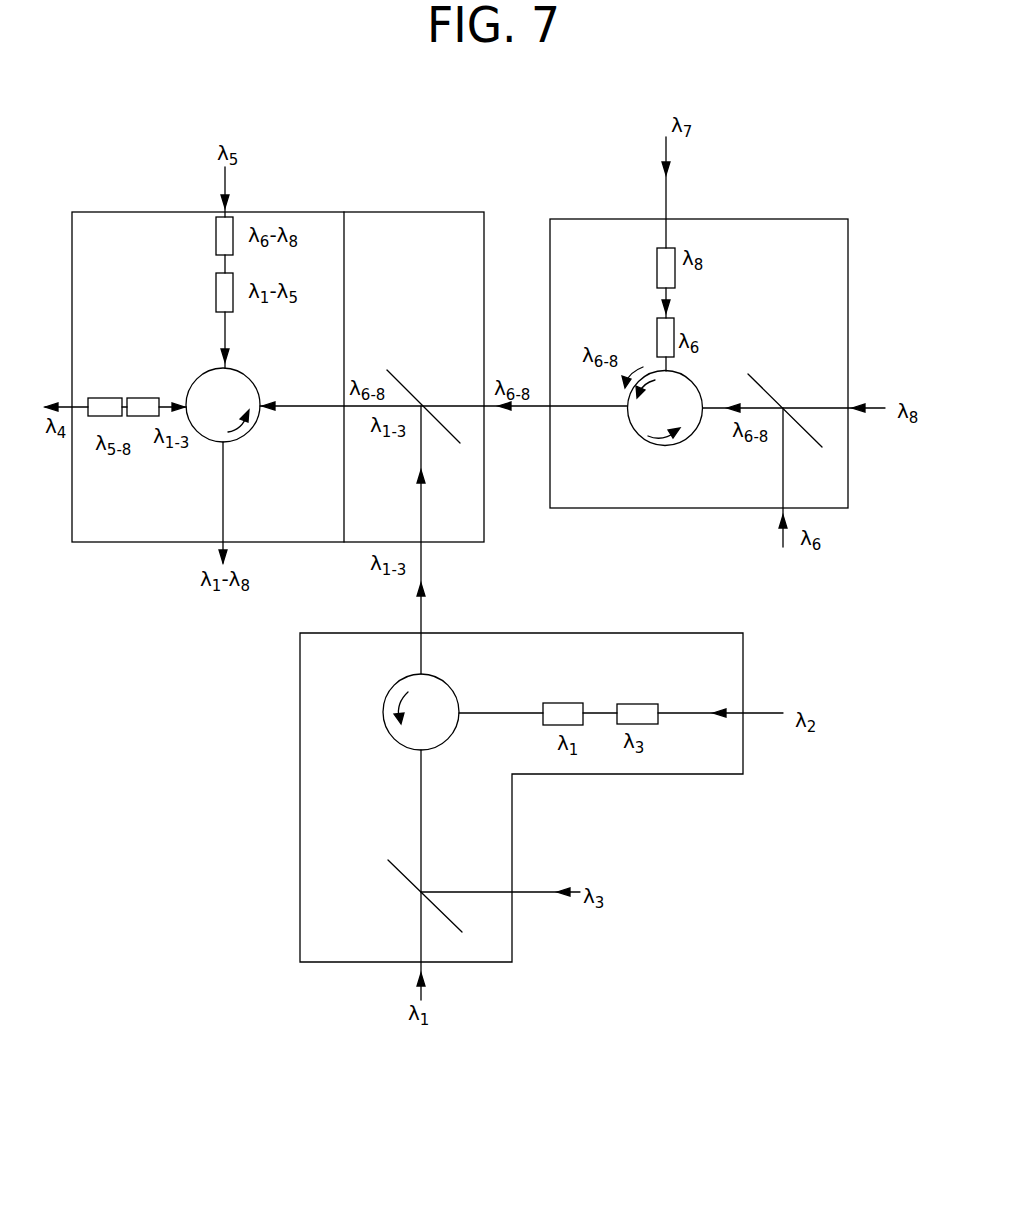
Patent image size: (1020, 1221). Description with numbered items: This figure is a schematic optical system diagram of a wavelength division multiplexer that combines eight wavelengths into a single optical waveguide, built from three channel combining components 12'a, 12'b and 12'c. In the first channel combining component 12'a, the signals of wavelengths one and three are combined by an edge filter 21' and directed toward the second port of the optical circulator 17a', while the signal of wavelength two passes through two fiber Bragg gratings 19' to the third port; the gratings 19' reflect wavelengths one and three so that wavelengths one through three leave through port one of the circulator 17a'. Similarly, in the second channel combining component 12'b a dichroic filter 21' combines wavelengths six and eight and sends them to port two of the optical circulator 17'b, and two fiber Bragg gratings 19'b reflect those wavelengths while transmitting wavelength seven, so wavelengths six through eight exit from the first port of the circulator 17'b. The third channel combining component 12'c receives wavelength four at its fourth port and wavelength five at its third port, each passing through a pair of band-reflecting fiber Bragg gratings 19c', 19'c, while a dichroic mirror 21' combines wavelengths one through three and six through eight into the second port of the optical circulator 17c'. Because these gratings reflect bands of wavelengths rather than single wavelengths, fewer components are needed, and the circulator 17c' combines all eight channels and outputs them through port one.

The third channel combining component 12'c is at (278, 340).
The second channel combining component 12'b is at (713, 333).
The first channel combining component 12'a is at (521, 768).
The optical circulator 17c' is at (258, 386).
The optical circulator 17'b is at (641, 425).
The optical circulator 17a' is at (460, 703).
The fiber Bragg gratings 19c' is at (160, 316).
The fiber Bragg grating 19'c is at (631, 257).
The fiber Bragg gratings 19'b is at (631, 327).
The fiber Bragg gratings 19' is at (625, 682).
The edge filter 21' is at (579, 626).